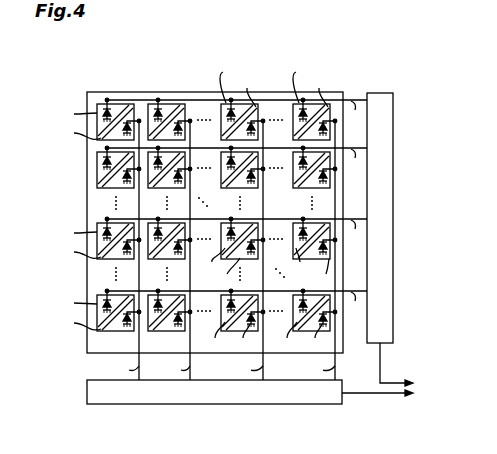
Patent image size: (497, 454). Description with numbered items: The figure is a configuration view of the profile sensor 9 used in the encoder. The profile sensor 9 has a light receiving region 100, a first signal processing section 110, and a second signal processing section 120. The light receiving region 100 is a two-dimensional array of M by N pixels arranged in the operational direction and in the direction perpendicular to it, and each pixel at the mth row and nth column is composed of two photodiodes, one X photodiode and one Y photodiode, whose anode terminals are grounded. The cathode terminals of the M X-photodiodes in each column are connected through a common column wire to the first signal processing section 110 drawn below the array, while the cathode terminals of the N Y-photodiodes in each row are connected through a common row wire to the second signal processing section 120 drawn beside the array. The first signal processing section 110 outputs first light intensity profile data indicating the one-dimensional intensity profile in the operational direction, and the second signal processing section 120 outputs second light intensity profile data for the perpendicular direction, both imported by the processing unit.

The profile sensor 9 is at (193, 59).
The light receiving region 100 is at (135, 92).
The first signal processing section 110 is at (148, 405).
The second signal processing section 120 is at (380, 93).